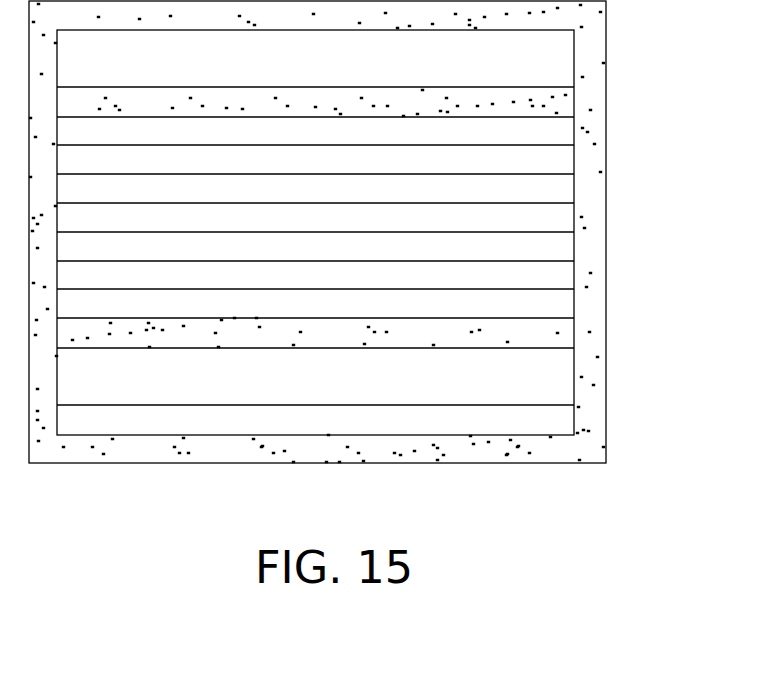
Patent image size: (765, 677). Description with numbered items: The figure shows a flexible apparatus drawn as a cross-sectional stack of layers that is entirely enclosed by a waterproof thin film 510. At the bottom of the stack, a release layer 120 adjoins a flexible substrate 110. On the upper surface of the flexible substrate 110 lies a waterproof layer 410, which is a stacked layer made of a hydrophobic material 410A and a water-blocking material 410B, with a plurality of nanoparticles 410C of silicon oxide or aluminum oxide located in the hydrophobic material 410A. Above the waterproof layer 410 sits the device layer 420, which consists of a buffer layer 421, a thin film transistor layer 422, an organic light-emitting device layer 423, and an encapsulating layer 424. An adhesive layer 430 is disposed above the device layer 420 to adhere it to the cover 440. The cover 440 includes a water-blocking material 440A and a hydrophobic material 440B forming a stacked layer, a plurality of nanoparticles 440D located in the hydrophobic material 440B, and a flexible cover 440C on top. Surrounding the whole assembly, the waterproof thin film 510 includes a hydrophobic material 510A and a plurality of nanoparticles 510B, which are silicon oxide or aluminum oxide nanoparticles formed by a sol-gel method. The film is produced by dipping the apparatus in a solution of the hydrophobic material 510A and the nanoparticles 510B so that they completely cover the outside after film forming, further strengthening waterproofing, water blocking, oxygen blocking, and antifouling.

The flexible substrate 110 is at (563, 391).
The release layer 120 is at (563, 419).
The waterproof layer 410 is at (397, 331).
The hydrophobic material 410A is at (563, 331).
The water-blocking material 410B is at (563, 302).
The nanoparticles 410C is at (509, 342).
The device layer 420 is at (397, 232).
The buffer layer 421 is at (563, 274).
The thin film transistor layer 422 is at (563, 246).
The organic light-emitting device layer 423 is at (563, 217).
The encapsulating layer 424 is at (563, 187).
The adhesive layer 430 is at (563, 159).
The cover 440 is at (397, 88).
The water-blocking material 440A is at (563, 131).
The hydrophobic material 440B is at (563, 102).
The flexible cover 440C is at (563, 42).
The nanoparticles 440D is at (552, 96).
The waterproof thin film 510 is at (317, 285).
The hydrophobic material 510A is at (460, 452).
The nanoparticles 510B is at (437, 521).